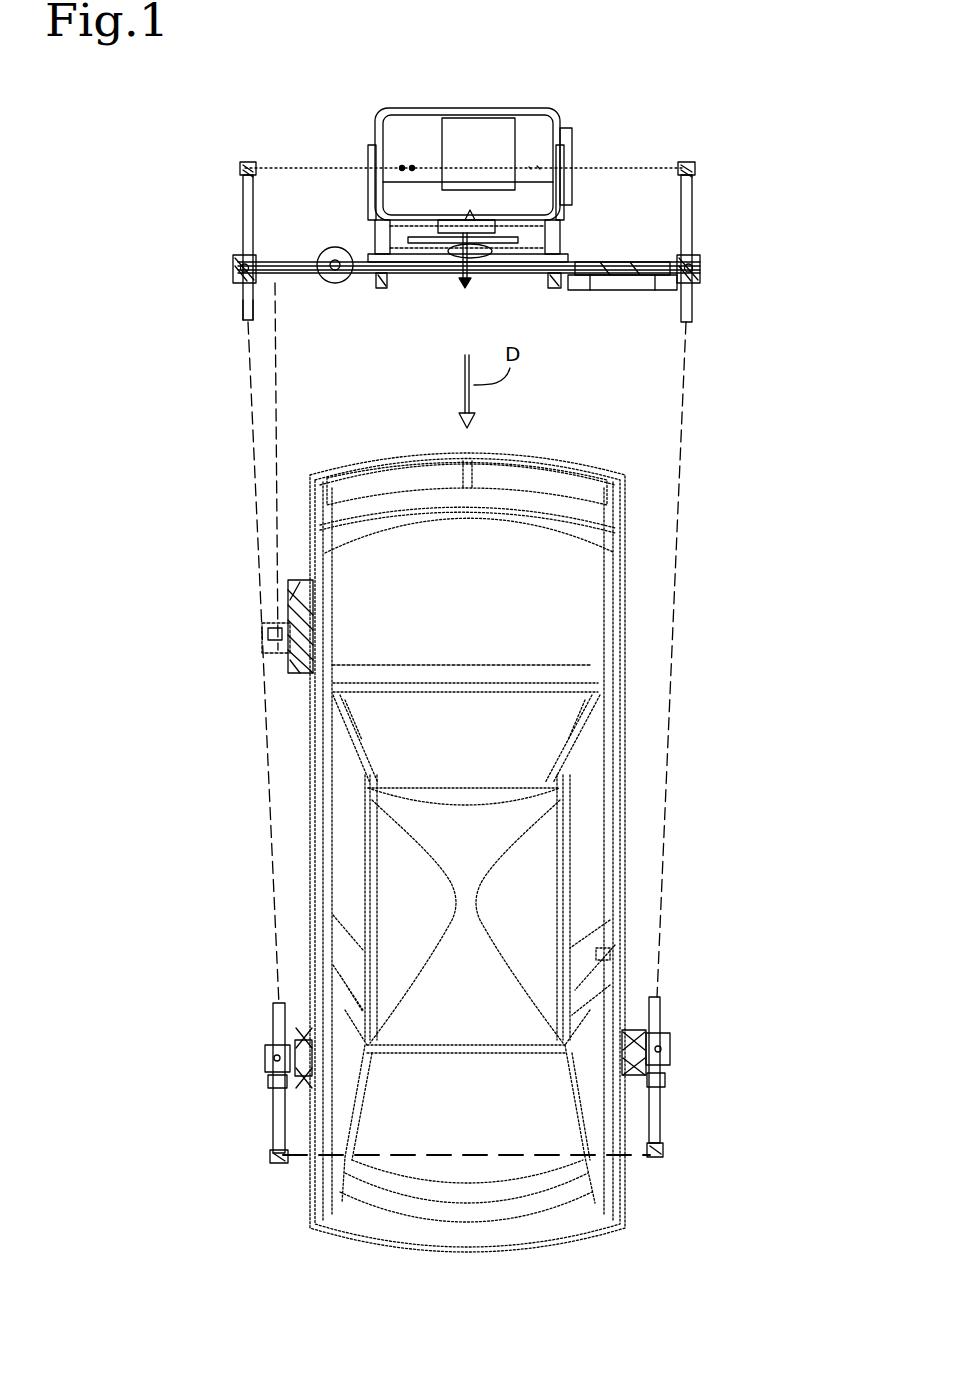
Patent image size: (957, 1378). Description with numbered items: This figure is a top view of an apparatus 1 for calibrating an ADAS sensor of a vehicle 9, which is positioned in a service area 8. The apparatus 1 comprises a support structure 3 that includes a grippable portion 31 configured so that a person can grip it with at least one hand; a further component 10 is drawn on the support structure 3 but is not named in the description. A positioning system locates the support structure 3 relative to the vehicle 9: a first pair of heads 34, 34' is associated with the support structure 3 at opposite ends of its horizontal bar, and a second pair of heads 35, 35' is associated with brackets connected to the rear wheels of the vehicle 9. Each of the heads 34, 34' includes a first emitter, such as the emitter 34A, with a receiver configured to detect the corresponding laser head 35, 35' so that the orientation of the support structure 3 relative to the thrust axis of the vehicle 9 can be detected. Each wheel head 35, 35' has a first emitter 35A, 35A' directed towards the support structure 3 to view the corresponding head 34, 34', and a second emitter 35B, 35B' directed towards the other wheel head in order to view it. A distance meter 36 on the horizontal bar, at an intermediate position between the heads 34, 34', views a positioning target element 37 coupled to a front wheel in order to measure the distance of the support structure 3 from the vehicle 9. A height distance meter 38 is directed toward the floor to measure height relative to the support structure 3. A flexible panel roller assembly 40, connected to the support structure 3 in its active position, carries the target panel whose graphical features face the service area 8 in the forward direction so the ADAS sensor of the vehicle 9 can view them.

The apparatus 1 is at (150, 255).
The support structure 3 is at (610, 145).
The service area 8 is at (765, 668).
The vehicle 9 is at (538, 877).
The display screen 10 is at (481, 128).
The grippable portion 31 is at (415, 108).
The head of first pair of heads 34 is at (211, 232).
The head of first pair of heads 34' is at (750, 297).
The first emitter 34A is at (247, 322).
The head of second pair of heads 35 is at (224, 1028).
The head of second pair of heads 35' is at (702, 1045).
The first emitter 35A is at (238, 1011).
The first emitter 35A' is at (730, 1026).
The second emitter 35B is at (263, 1203).
The second emitter 35B' is at (672, 1197).
The distance meter 36 is at (272, 276).
The positioning target element 37 is at (284, 655).
The height distance meter 38 is at (615, 262).
The flexible panel roller assembly 40 is at (330, 248).